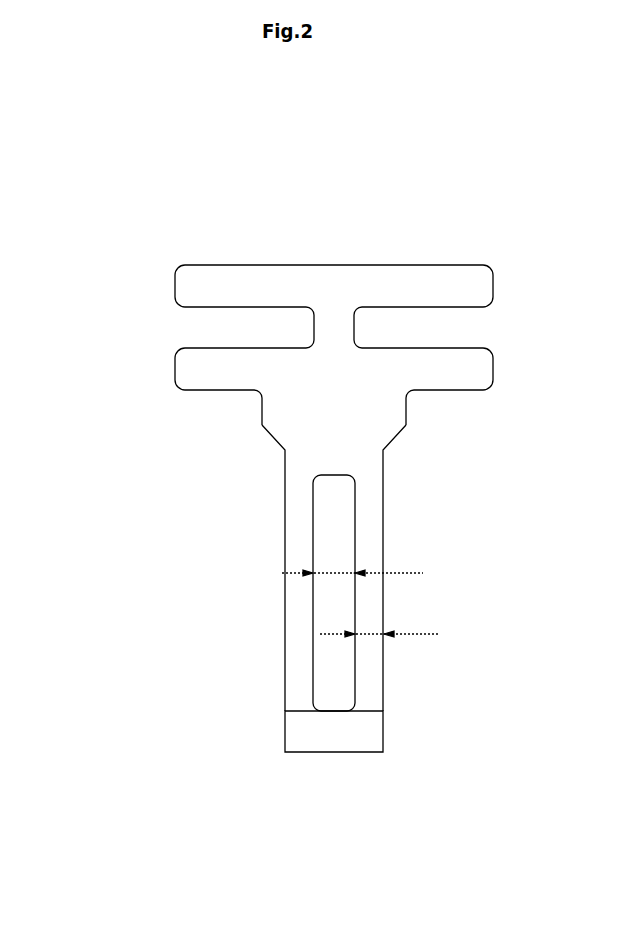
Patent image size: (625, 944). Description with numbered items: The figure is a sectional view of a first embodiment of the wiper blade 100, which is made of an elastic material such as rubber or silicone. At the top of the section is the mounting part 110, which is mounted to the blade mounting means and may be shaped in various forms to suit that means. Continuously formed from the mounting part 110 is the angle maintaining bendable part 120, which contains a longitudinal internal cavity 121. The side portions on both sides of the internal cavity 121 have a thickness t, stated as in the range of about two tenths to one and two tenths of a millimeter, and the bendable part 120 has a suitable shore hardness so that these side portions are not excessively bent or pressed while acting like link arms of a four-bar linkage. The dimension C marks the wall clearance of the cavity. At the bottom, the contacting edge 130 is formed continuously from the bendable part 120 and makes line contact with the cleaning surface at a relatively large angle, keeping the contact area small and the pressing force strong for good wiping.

The wiper blade 100 is at (117, 137).
The mounting part 110 is at (455, 272).
The angle maintaining bendable part 120 is at (382, 571).
The longitudinal internal cavity 121 is at (342, 548).
The contacting edge 130 is at (338, 739).